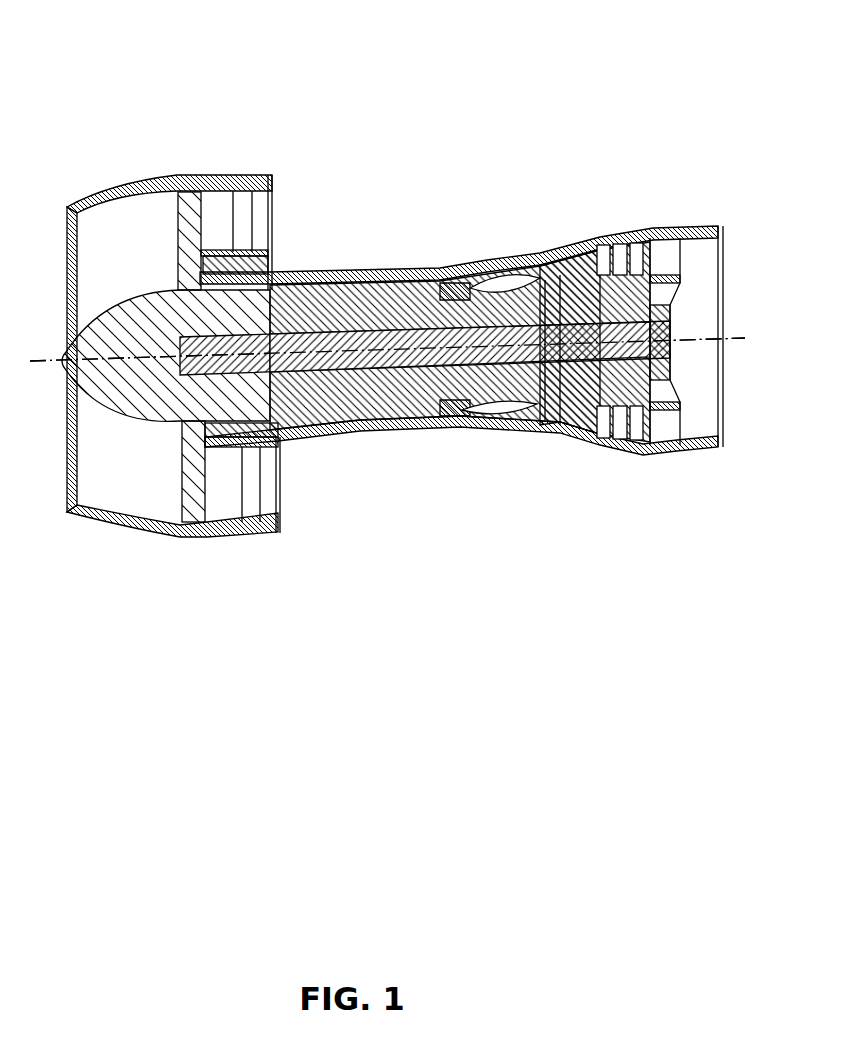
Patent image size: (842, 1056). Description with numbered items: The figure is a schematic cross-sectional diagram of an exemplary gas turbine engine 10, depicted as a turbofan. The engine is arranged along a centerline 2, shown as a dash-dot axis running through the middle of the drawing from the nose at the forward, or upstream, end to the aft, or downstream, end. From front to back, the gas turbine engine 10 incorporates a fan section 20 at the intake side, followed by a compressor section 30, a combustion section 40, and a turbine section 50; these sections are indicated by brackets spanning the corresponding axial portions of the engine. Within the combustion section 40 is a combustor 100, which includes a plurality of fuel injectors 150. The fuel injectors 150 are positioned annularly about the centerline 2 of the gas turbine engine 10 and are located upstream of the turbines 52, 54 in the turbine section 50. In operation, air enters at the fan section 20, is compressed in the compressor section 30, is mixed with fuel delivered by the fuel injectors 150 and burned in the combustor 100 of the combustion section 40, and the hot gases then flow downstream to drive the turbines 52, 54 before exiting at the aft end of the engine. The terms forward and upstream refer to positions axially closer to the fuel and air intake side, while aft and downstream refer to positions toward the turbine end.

The gas turbine engine 10 is at (387, 289).
The fan section 20 is at (178, 263).
The compressor section 30 is at (440, 263).
The combustion section 40 is at (490, 258).
The turbine section 50 is at (631, 271).
The turbine 52 is at (548, 243).
The turbine 54 is at (632, 306).
The combustor 100 is at (501, 314).
The fuel injectors 150 is at (450, 253).
The centerline 2 is at (693, 337).